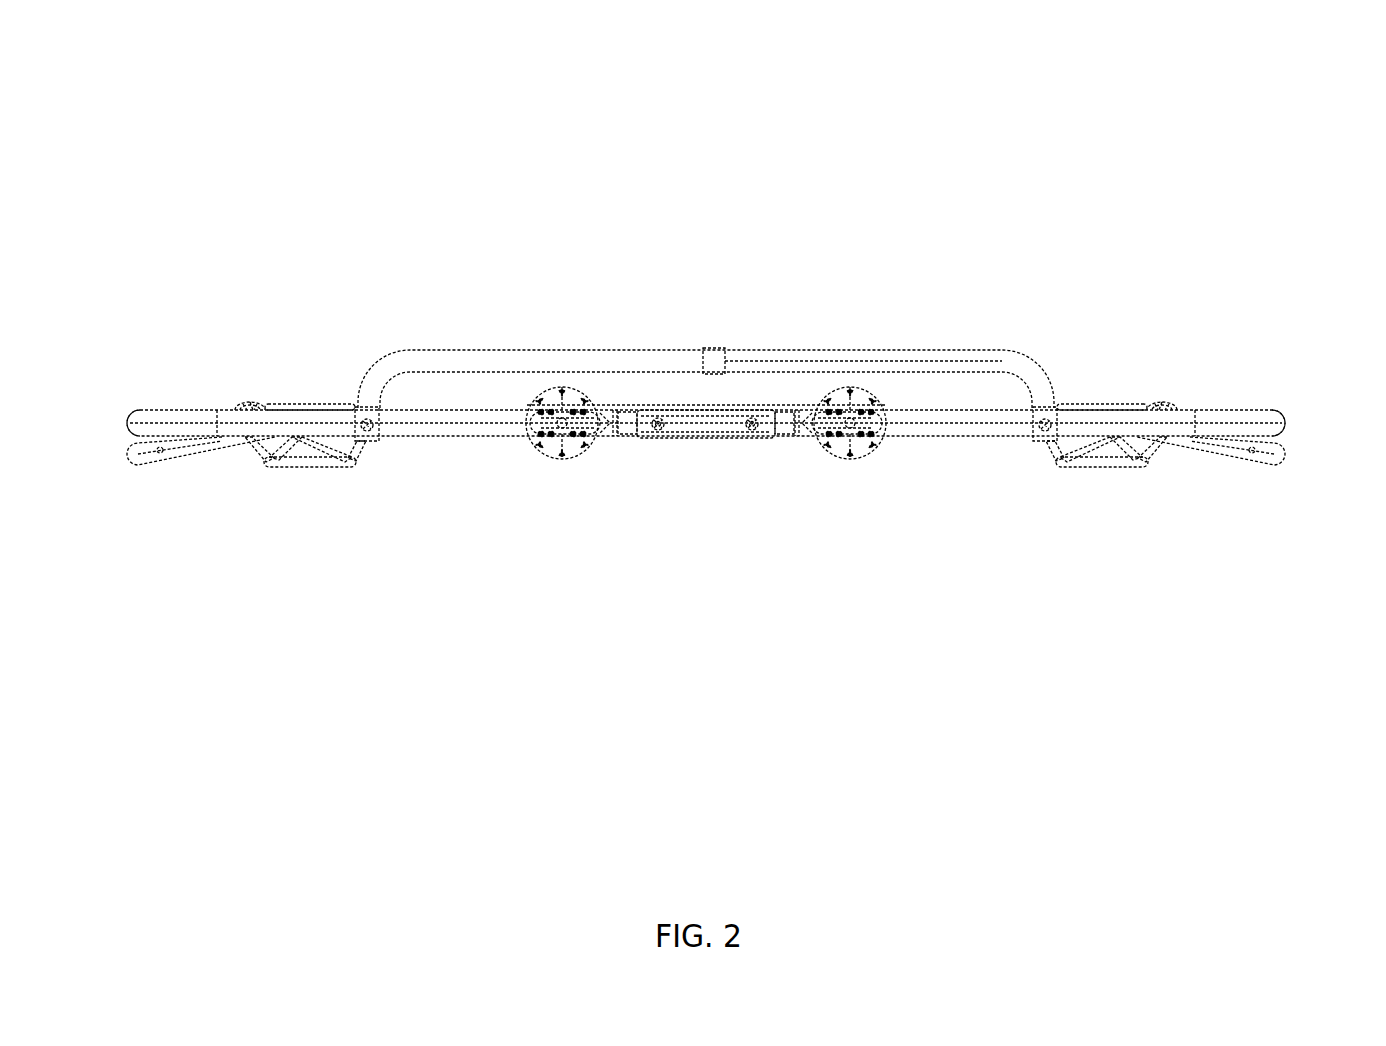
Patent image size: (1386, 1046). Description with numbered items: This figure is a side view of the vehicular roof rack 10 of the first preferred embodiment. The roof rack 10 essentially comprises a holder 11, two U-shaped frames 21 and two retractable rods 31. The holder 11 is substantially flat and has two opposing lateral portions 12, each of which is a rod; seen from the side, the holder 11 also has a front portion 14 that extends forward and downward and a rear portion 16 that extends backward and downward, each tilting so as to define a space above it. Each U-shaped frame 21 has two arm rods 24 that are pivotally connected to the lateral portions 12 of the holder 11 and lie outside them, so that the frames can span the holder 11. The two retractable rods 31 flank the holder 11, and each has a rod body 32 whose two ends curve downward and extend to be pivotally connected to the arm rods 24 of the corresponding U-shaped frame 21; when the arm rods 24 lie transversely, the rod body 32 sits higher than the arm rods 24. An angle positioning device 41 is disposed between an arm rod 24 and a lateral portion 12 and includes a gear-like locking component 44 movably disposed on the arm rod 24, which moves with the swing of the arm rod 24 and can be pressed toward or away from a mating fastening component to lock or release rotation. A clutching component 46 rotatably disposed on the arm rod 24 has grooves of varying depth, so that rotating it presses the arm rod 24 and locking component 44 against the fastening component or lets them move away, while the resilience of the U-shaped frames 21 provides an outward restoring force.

The vehicular roof rack 10 is at (719, 331).
The holder 11 is at (733, 444).
The lateral portion 12 is at (690, 440).
The front portion 14 is at (137, 466).
The rear portion 16 is at (1280, 460).
The U-shaped frame 21 is at (134, 408).
The arm rod 24 is at (473, 440).
The retractable rod 31 is at (632, 352).
The rod body 32 is at (680, 350).
The angle positioning device 41 is at (570, 461).
The locking component 44 is at (546, 456).
The clutching component 46 is at (602, 440).